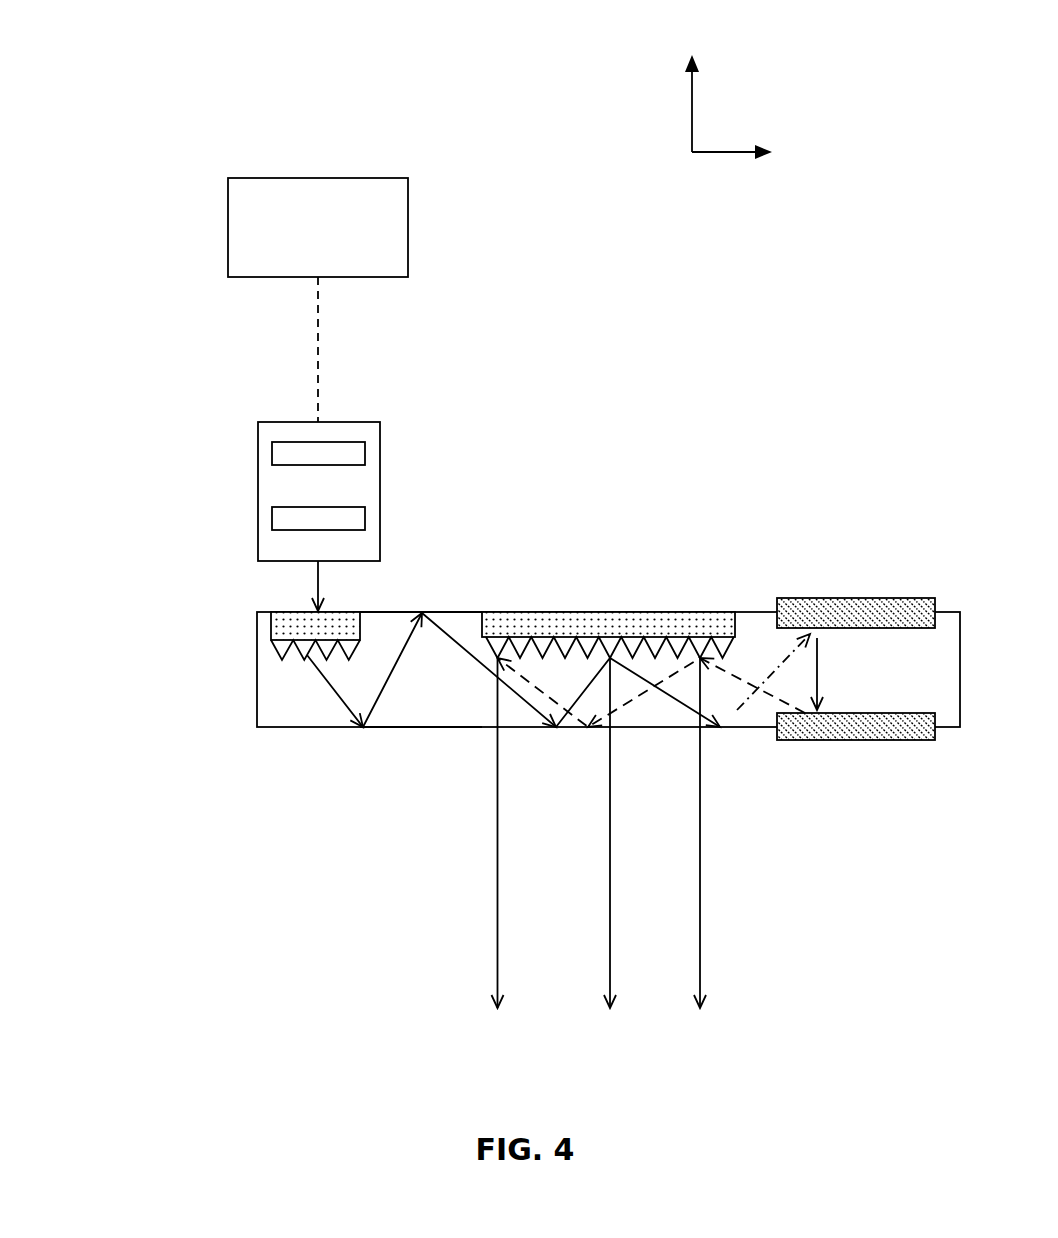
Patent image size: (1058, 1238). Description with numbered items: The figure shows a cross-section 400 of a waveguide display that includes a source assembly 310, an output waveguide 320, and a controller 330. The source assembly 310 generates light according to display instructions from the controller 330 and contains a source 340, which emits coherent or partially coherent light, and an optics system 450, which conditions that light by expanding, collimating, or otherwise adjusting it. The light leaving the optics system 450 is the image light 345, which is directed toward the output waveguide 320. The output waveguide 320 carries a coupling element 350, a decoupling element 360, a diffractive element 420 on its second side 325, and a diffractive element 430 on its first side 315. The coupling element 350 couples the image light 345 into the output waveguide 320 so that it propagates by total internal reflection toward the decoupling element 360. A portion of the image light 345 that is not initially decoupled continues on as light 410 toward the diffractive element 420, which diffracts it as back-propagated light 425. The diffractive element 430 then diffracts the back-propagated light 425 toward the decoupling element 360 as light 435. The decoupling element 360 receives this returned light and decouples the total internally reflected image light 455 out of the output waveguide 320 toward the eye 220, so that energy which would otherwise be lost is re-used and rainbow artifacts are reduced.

The cross-section 400 is at (502, 548).
The controller 330 is at (318, 300).
The source assembly 310 is at (258, 440).
The source 340 is at (365, 452).
The optics system 450 is at (365, 525).
The image light 345 is at (318, 598).
The output waveguide 320 is at (257, 677).
The first side 315 is at (270, 730).
The second side 325 is at (740, 612).
The coupling element 350 is at (278, 631).
The decoupling element 360 is at (607, 625).
The diffractive element 420 is at (828, 613).
The diffractive element 430 is at (872, 733).
The back-propagated light 425 is at (820, 660).
The light 410 is at (737, 712).
The light 435 is at (778, 692).
The total internally reflected image light 455 is at (500, 967).
The eye 220 is at (657, 1063).